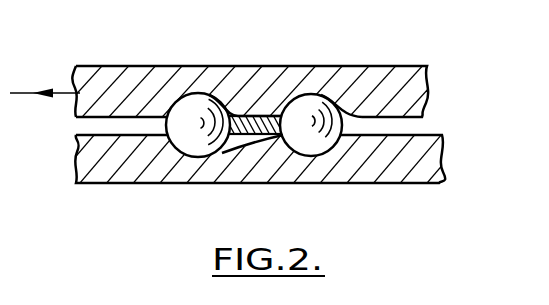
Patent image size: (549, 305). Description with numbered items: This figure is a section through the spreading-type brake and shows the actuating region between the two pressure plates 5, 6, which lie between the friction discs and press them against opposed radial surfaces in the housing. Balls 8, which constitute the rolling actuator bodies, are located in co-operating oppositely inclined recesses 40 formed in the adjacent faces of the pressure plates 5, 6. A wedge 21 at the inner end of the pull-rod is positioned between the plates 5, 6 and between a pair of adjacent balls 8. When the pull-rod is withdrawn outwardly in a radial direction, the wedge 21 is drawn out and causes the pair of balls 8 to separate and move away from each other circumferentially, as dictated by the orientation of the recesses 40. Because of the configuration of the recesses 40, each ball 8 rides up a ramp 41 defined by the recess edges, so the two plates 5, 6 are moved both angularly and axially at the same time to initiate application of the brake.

The pressure plate 5 is at (425, 157).
The pressure plate 6 is at (405, 95).
The ball 8 is at (193, 138).
The wedge 21 is at (255, 116).
The recess 40 is at (182, 93).
The ramp 41 is at (234, 110).